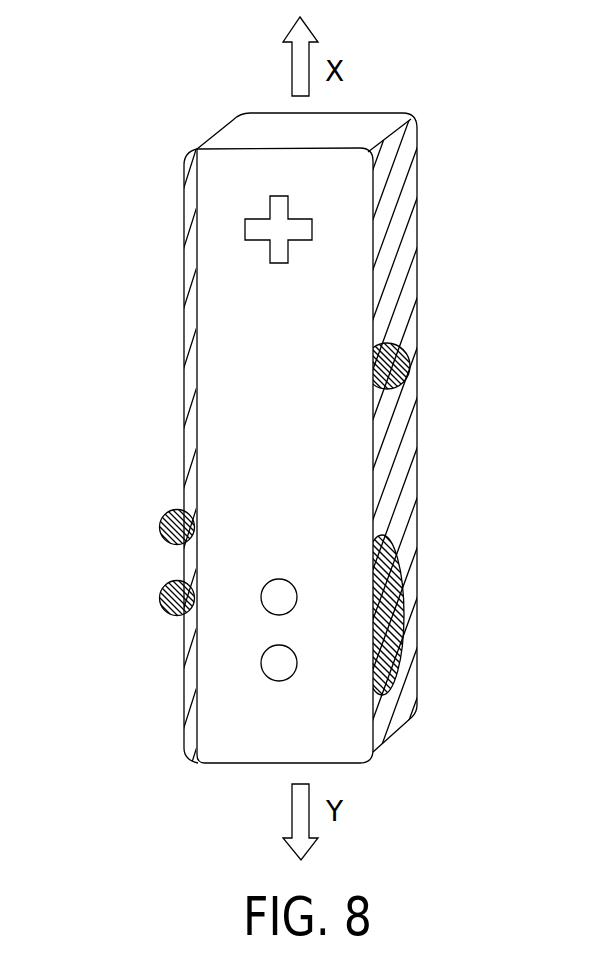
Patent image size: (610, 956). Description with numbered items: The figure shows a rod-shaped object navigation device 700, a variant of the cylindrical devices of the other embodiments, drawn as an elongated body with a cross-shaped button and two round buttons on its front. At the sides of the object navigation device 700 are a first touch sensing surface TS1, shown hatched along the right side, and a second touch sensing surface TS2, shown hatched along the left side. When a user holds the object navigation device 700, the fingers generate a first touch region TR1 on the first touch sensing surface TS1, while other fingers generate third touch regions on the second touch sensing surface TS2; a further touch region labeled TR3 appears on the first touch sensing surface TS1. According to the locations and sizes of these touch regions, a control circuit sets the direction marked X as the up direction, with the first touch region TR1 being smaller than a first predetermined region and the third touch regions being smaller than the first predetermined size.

The object navigation device 700 is at (435, 127).
The first touch region TR1 is at (402, 362).
The third touch region TR3 is at (402, 615).
The first touch sensing surface TS1 is at (402, 688).
The second touch sensing surface TS2 is at (187, 670).